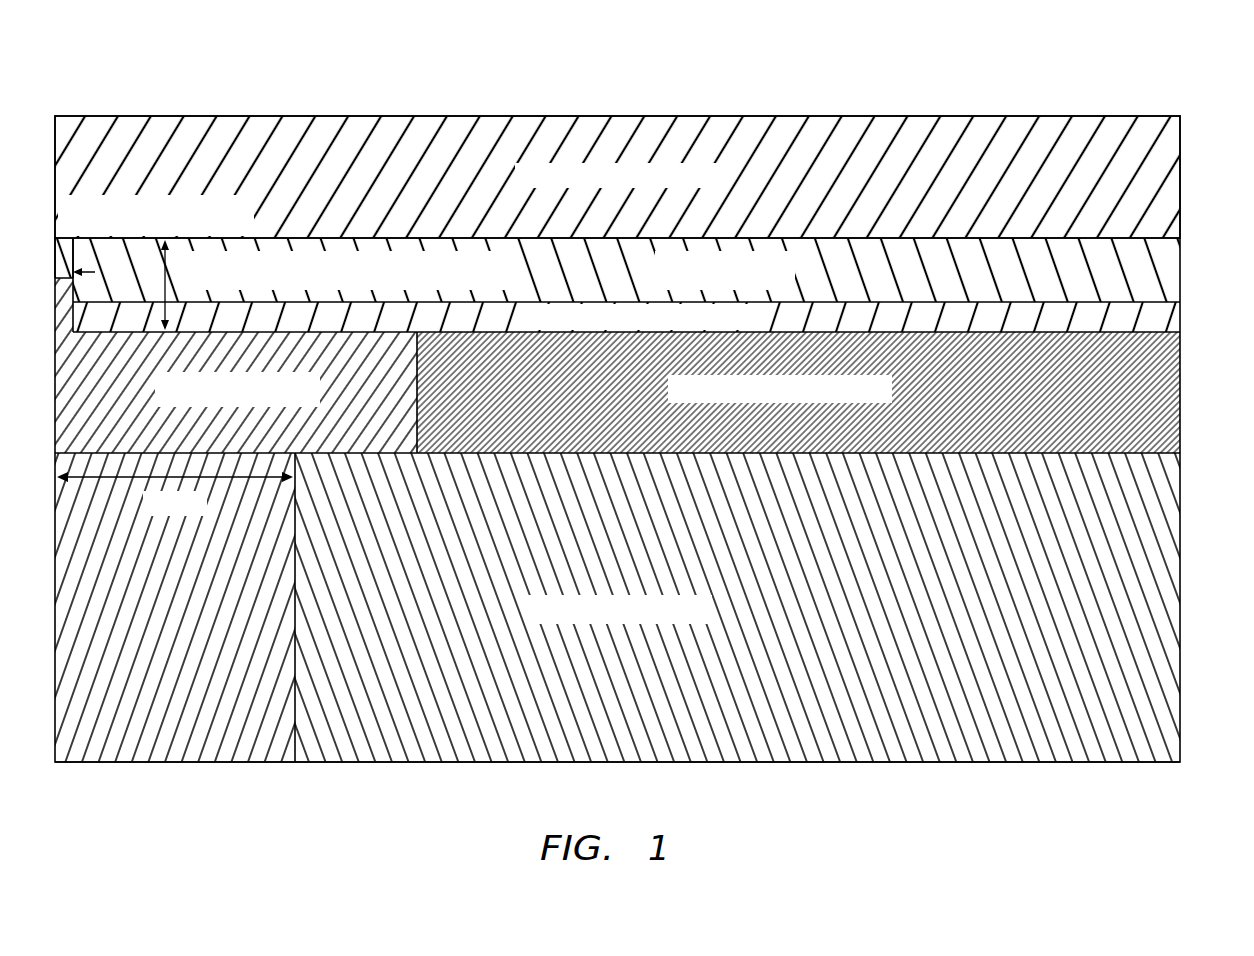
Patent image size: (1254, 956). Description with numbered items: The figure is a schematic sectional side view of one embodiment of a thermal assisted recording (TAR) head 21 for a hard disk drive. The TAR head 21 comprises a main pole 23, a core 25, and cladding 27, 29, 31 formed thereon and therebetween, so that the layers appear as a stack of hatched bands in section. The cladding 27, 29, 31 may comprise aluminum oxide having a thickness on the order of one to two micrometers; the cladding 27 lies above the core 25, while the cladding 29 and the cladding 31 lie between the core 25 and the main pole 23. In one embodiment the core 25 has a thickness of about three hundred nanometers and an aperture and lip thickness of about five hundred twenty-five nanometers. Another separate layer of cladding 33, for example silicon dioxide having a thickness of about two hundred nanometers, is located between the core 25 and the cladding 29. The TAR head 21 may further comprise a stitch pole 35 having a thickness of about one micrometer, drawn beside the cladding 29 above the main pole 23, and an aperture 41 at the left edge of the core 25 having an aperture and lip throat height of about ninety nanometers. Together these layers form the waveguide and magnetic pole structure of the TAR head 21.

The thermal assisted recording (TAR) head 21 is at (98, 67).
The main pole 23 is at (1180, 515).
The core 25 is at (1180, 264).
The cladding 27 is at (1180, 182).
The cladding 29 is at (1180, 398).
The cladding 31 is at (55, 686).
The cladding 33 is at (1180, 312).
The stitch pole 35 is at (55, 401).
The aperture 41 is at (55, 272).